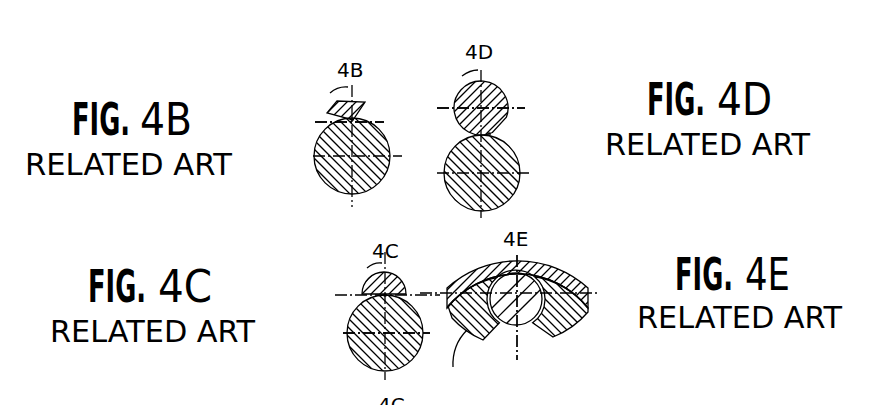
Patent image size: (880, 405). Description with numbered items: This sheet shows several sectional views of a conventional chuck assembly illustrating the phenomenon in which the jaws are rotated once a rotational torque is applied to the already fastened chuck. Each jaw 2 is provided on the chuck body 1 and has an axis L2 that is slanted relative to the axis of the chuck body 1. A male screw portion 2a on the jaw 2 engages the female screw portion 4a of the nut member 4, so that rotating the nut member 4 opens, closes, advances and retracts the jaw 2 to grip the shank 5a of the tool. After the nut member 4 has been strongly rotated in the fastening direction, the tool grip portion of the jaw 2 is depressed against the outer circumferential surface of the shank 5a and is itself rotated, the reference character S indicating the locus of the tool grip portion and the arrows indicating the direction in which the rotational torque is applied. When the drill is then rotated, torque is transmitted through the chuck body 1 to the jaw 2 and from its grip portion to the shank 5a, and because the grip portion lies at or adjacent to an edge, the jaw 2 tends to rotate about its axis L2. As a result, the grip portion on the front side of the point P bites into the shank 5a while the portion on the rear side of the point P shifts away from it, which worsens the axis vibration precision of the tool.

In FIG. 4E, the chuck body 1 is at (578, 323).
In FIG. 4B, the jaw 2 is at (338, 106).
In FIG. 4D, the jaw 2 is at (483, 91).
In FIG. 4C, the jaw 2 is at (366, 286).
In FIG. 4E, the jaw 2 is at (497, 333).
In FIG. 4E, the male screw portion 2a is at (530, 265).
In FIG. 4E, the nut member 4 is at (583, 268).
In FIG. 4E, the female screw portion 4a is at (475, 283).
In FIG. 4B, the shank 5a is at (322, 183).
In FIG. 4D, the shank 5a is at (522, 166).
In FIG. 4C, the shank 5a is at (348, 322).
In FIG. 4B, the locus of the tool grip portion S is at (347, 120).
In FIG. 4D, the locus of the tool grip portion S is at (496, 132).
In FIG. 4C, the point P is at (370, 297).
In FIG. 4B, the axis of the jaw L2 is at (345, 123).
In FIG. 4D, the axis of the jaw L2 is at (482, 110).
In FIG. 4C, the axis of the jaw L2 is at (377, 293).
In FIG. 4E, the axis of the jaw L2 is at (530, 328).